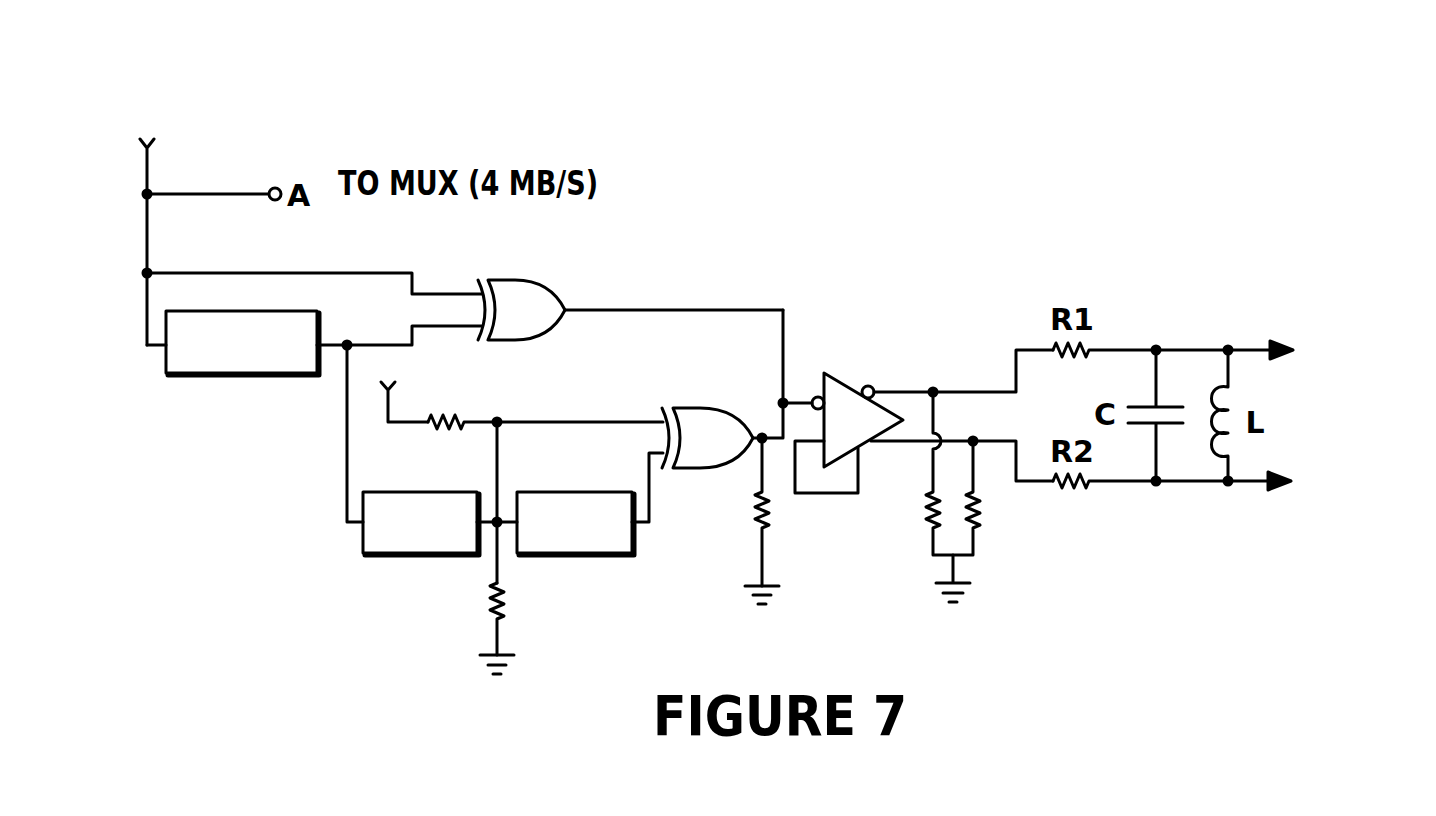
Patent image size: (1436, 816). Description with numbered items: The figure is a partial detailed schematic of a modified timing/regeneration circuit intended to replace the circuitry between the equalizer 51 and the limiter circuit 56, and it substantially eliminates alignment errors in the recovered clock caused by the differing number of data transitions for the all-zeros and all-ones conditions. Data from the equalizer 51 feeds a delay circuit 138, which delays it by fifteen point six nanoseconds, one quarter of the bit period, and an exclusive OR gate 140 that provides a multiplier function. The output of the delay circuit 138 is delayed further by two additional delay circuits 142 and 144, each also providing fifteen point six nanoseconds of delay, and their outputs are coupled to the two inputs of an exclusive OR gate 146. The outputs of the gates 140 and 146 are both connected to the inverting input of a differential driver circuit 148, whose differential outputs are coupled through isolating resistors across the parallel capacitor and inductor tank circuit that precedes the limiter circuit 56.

The equalizer 51 is at (147, 196).
The delay circuit 138 is at (195, 373).
The exclusive OR gate 140 is at (548, 292).
The delay circuit 142 is at (392, 553).
The delay circuit 144 is at (586, 553).
The exclusive OR gate 146 is at (688, 408).
The differential driver circuit 148 is at (843, 382).
The limiter circuit 56 is at (1325, 415).